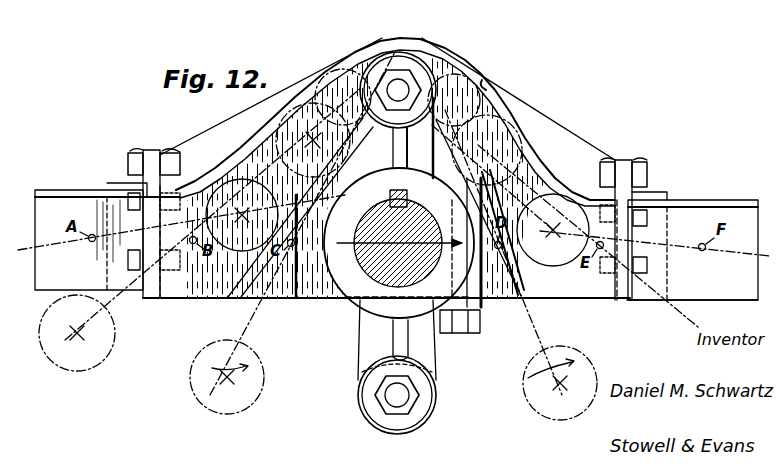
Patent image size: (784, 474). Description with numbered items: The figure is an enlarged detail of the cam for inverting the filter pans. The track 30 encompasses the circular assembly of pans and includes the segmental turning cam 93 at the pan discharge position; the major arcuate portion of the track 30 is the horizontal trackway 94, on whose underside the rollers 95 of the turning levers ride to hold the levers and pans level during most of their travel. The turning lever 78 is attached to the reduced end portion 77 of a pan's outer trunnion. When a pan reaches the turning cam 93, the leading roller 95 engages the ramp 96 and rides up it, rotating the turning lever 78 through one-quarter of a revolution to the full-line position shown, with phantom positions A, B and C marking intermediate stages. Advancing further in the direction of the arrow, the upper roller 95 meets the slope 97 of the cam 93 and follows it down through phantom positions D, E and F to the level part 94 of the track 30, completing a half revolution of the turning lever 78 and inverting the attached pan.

The track 30 is at (727, 306).
The reduced end portion 77 is at (370, 262).
The turning lever 78 is at (354, 304).
The turning cam 93 is at (366, 46).
The horizontal trackway 94 is at (67, 189).
The roller 95 is at (403, 52).
The ramp 96 is at (222, 297).
The slope 97 is at (484, 80).